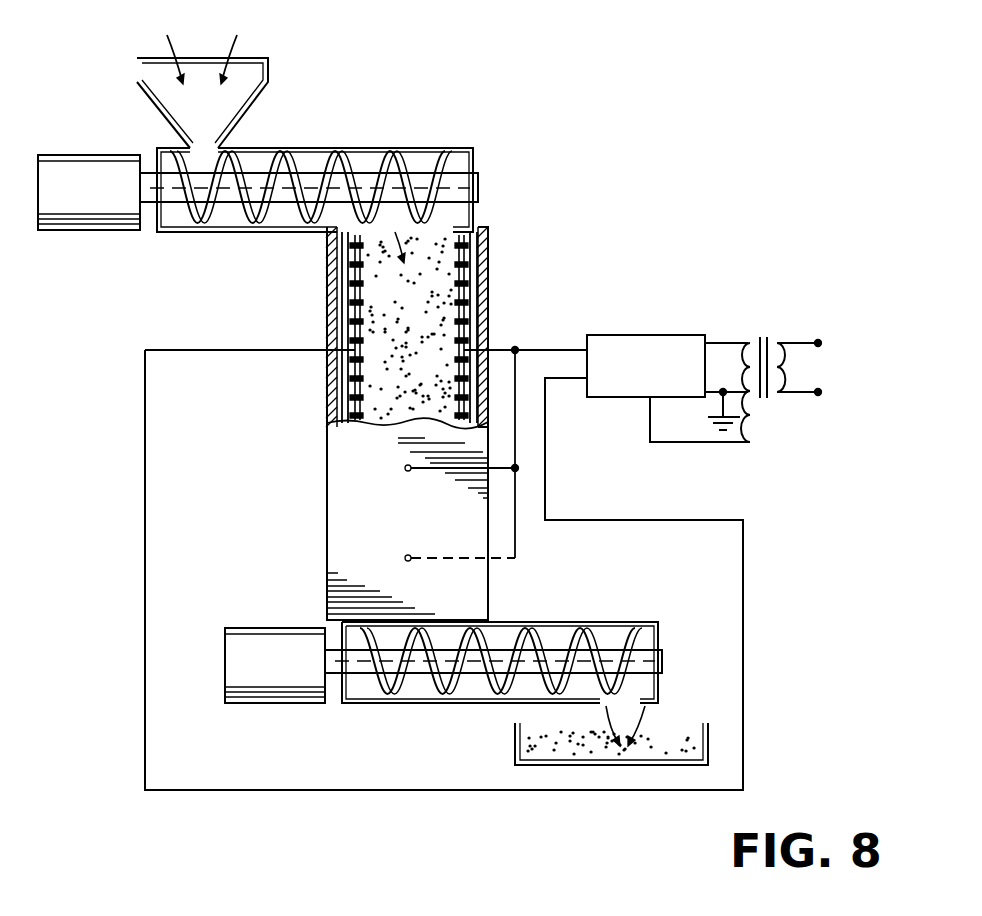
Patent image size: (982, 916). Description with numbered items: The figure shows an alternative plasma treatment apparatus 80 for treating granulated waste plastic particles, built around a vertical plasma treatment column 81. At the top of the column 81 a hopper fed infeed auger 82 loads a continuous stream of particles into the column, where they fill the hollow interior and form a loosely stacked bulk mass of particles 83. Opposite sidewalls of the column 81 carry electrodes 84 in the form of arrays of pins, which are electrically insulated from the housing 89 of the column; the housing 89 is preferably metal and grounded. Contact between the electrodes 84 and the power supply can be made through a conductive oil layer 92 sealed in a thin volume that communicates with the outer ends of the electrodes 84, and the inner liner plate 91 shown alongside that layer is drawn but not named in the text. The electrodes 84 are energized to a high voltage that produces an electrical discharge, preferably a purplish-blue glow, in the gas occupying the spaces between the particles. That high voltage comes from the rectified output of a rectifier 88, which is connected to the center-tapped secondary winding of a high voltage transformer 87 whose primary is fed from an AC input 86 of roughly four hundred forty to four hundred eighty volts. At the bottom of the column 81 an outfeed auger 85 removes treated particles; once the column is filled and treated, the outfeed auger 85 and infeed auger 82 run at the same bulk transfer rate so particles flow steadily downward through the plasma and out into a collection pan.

The plasma treatment apparatus 80 is at (625, 81).
The vertical plasma treatment column 81 is at (490, 336).
The infeed auger 82 is at (342, 141).
The bulk mass of particles 83 is at (414, 355).
The electrodes 84 is at (472, 305).
The outfeed auger 85 is at (552, 625).
The input 86 is at (838, 398).
The high voltage transformer 87 is at (766, 335).
The rectifier 88 is at (638, 334).
The housing 89 is at (490, 235).
The electrode plate 91 is at (346, 277).
The conductive oil layer 92 is at (344, 319).